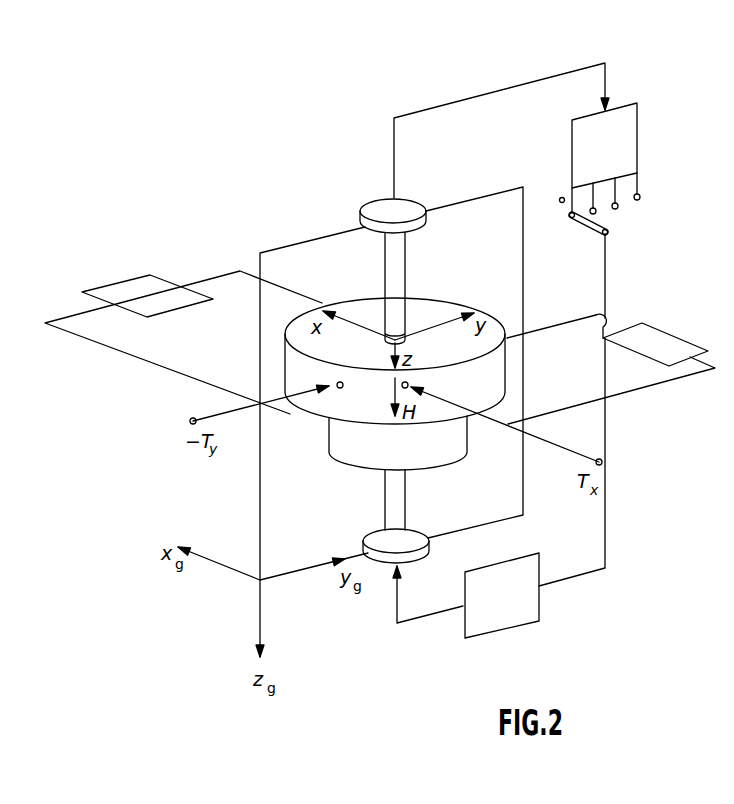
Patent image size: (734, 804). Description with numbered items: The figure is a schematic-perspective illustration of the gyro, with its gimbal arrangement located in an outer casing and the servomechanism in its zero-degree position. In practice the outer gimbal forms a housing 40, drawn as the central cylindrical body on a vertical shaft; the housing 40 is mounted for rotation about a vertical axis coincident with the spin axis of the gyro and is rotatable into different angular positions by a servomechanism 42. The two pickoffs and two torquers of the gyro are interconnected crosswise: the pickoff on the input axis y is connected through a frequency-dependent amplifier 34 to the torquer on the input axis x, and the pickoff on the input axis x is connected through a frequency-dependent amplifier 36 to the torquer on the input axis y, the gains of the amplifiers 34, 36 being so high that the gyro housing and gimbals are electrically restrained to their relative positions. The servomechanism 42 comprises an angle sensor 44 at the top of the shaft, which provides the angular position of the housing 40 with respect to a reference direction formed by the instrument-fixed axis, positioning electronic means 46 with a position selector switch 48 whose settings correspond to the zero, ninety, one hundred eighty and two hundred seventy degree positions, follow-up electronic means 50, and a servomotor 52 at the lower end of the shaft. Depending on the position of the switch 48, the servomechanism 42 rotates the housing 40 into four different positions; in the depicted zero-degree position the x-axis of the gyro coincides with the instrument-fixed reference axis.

The frequency-dependent amplifier 34 is at (660, 342).
The frequency-dependent amplifier 36 is at (138, 285).
The housing 40 is at (437, 458).
The servomechanism 42 is at (652, 155).
The angle sensor 44 is at (405, 207).
The positioning electronic means 46 is at (627, 132).
The position selector switch 48 is at (583, 227).
The follow-up electronic means 50 is at (518, 615).
The servomotor 52 is at (383, 557).